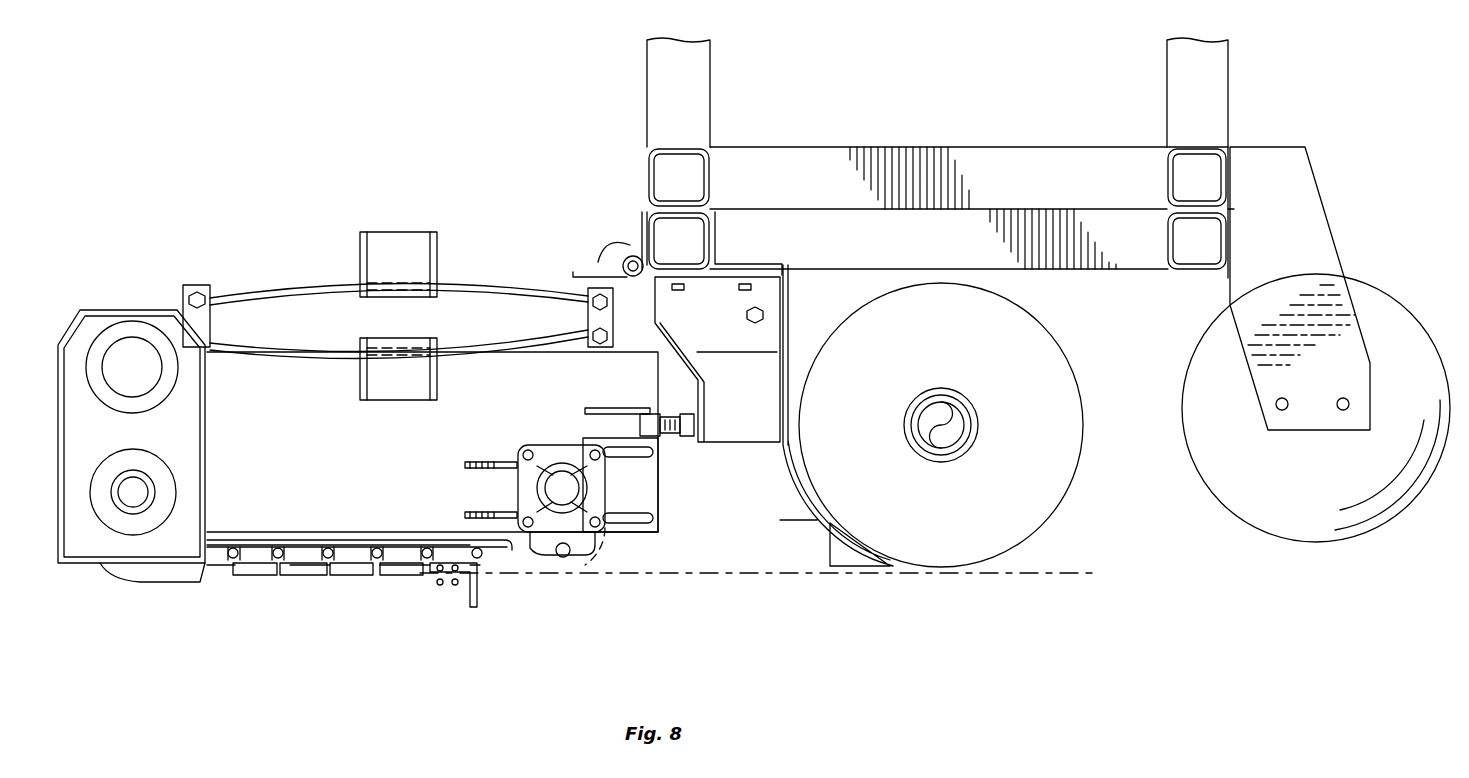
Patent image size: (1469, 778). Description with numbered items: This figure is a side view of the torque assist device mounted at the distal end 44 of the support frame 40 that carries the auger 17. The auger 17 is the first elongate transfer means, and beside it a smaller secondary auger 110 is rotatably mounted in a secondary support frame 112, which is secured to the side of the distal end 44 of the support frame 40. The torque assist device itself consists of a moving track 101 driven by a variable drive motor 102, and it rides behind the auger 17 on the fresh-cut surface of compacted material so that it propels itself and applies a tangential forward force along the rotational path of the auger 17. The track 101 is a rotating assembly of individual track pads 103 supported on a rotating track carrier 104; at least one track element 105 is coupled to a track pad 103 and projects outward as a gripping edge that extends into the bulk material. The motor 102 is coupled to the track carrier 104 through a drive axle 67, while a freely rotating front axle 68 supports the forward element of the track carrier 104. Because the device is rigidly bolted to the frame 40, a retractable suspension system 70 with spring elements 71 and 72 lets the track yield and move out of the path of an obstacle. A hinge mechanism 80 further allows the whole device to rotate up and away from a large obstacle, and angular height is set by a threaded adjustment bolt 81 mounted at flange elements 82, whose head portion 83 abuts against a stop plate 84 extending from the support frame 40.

The auger 17 is at (996, 522).
The support frame 40 is at (706, 172).
The distal end 44 is at (1210, 100).
The drive axle 67 is at (140, 490).
The front axle 68 is at (580, 490).
The retractable suspension system 70 is at (422, 225).
The spring element 71 is at (283, 285).
The spring element 72 is at (243, 350).
The hinge mechanism 80 is at (625, 258).
The threaded adjustment bolt 81 is at (666, 438).
The flange elements 82 is at (596, 405).
The head portion 83 is at (700, 436).
The stop plate 84 is at (703, 422).
The track 101 is at (355, 582).
The motor 102 is at (136, 365).
The track pads 103 is at (250, 577).
The track carrier 104 is at (540, 555).
The track element 105 is at (478, 605).
The secondary auger 110 is at (1262, 505).
The secondary support frame 112 is at (1302, 204).